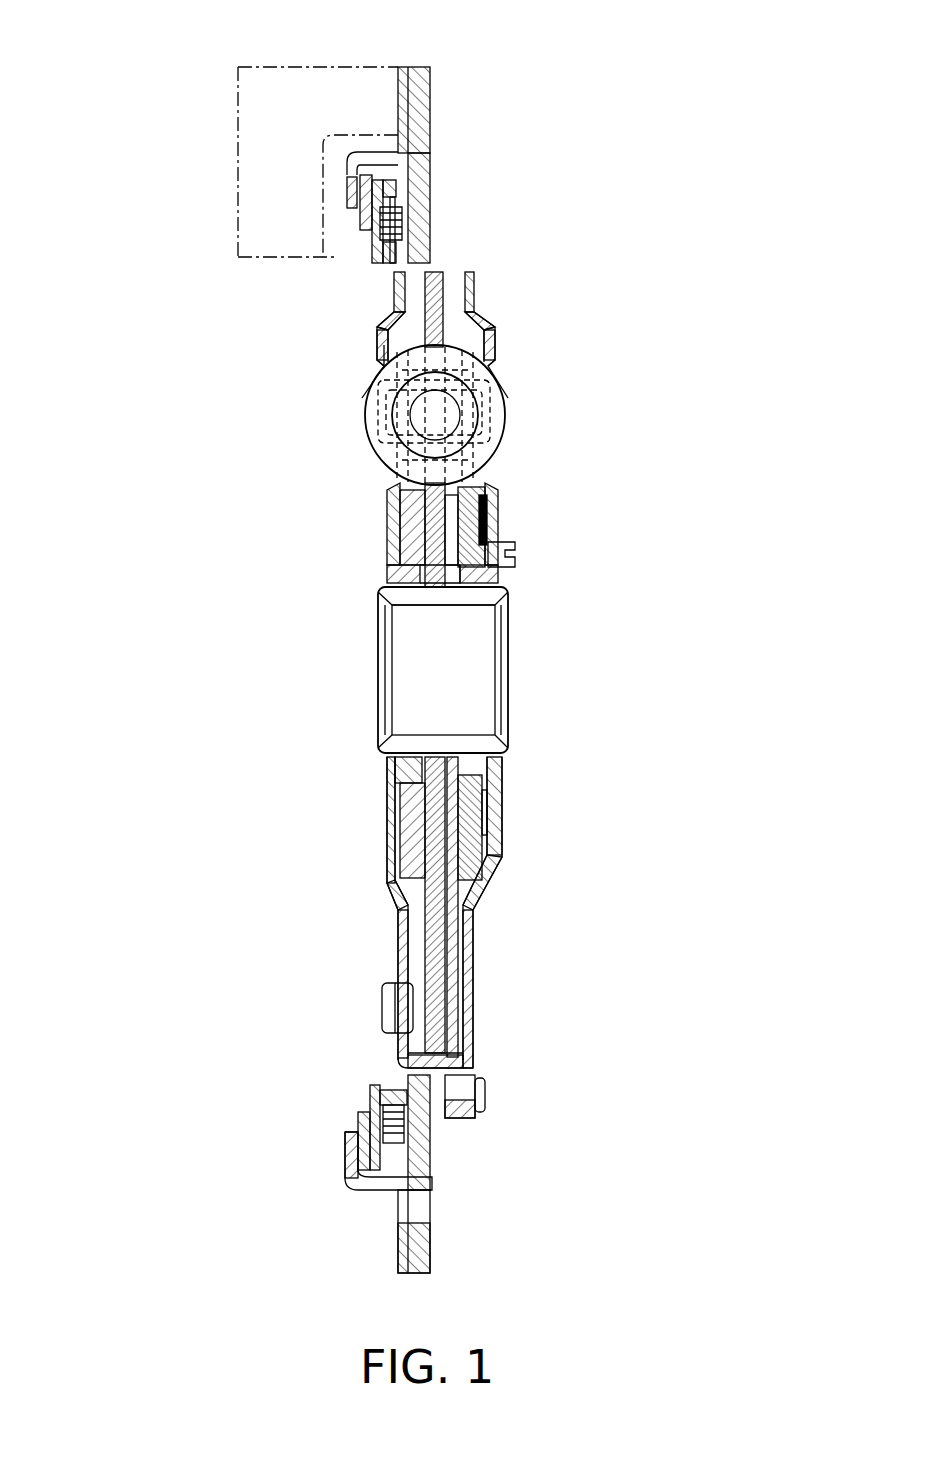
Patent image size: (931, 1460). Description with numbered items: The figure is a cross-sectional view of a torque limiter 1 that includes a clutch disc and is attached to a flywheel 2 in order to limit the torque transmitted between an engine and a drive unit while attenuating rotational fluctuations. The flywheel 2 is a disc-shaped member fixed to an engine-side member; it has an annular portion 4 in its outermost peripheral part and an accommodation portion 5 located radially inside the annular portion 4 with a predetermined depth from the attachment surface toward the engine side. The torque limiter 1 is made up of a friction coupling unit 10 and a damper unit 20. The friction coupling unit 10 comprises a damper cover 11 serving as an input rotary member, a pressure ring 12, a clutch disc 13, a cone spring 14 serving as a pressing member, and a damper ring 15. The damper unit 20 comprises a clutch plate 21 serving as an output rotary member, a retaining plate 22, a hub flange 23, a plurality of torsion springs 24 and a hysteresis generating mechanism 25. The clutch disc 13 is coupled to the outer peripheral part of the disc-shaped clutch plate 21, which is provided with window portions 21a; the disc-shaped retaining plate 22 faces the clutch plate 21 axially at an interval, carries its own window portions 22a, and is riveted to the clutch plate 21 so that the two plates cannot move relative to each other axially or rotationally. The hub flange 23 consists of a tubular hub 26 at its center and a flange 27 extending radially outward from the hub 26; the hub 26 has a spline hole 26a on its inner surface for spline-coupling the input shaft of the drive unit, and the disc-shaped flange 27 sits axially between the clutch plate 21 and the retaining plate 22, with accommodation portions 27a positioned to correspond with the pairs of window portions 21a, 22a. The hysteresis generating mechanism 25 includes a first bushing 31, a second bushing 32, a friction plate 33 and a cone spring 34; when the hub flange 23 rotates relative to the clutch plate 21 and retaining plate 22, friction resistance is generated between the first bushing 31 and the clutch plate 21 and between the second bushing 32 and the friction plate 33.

The torque limiter 1 is at (165, 378).
The flywheel 2 is at (250, 122).
The annular portion 4 is at (350, 76).
The accommodation portion 5 is at (325, 183).
The friction coupling unit 10 is at (460, 1162).
The damper cover 11 is at (420, 1240).
The pressure ring 12 is at (368, 1093).
The clutch disc 13 is at (388, 1088).
The cone spring 14 is at (360, 1125).
The damper ring 15 is at (352, 1152).
The damper unit 20 is at (528, 414).
The clutch plate 21 is at (397, 286).
The window portions 21a is at (378, 342).
The retaining plate 22 is at (470, 272).
The window portions 22a is at (495, 332).
The hub flange 23 is at (408, 782).
The torsion springs 24 is at (497, 378).
The hysteresis generating mechanism 25 is at (500, 530).
The hub 26 is at (498, 586).
The spline hole 26a is at (508, 605).
The flange 27 is at (412, 835).
The accommodation portions 27a is at (420, 356).
The first bushing 31 is at (410, 525).
The second bushing 32 is at (497, 492).
The friction plate 33 is at (438, 583).
The cone spring 34 is at (500, 505).